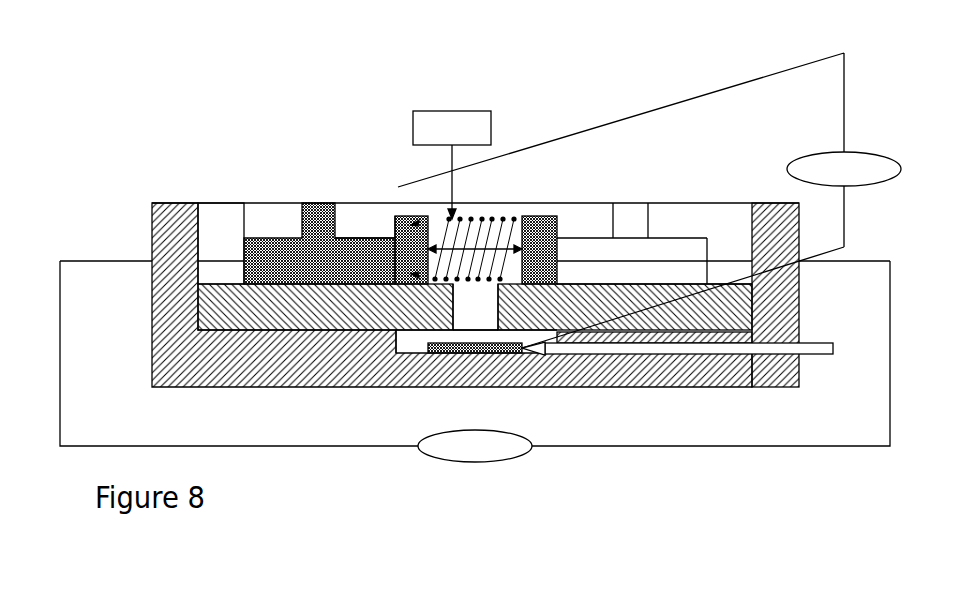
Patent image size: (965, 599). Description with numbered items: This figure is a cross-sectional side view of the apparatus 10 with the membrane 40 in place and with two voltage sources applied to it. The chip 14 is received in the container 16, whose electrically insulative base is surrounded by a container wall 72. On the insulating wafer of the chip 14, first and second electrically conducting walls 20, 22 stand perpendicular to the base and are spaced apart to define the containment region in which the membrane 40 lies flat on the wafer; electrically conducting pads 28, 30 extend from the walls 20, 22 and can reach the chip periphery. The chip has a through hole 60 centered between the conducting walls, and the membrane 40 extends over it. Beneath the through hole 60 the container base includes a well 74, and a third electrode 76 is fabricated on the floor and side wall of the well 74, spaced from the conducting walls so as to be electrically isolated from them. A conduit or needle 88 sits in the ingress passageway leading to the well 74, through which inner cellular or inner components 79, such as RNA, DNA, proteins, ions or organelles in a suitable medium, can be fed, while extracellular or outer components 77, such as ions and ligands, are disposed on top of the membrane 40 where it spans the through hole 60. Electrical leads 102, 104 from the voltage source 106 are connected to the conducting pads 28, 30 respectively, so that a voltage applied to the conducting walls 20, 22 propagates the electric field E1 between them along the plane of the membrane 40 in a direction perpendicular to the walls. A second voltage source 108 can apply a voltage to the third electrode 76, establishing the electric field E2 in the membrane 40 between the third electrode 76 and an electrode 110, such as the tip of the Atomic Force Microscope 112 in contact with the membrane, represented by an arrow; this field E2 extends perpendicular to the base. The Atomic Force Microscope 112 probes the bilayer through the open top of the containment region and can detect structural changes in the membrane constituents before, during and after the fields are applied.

The apparatus 10 is at (926, 363).
The chip 14 is at (720, 305).
The container 16 is at (750, 390).
The first electrically conducting wall 20 is at (395, 212).
The second electrically conducting wall 22 is at (530, 157).
The electrically conducting pad 28 is at (275, 247).
The electrically conducting pad 30 is at (690, 248).
The membrane 40 is at (553, 217).
The through hole 60 is at (557, 323).
The container wall 72 is at (160, 223).
The well 74 is at (420, 317).
The third electrode 76 is at (428, 337).
The extracellular or outer components 77 is at (512, 217).
The inner cellular or inner components 79 is at (453, 287).
The conduit or needle 88 is at (818, 356).
The electrical lead 102 is at (220, 260).
The electrical lead 104 is at (867, 260).
The voltage source 106 is at (460, 462).
The second voltage source 108 is at (900, 157).
The electrode 110 is at (393, 210).
The Atomic Force Microscope 112 is at (475, 122).
The electric field E1 is at (470, 210).
The electric field E2 is at (373, 210).